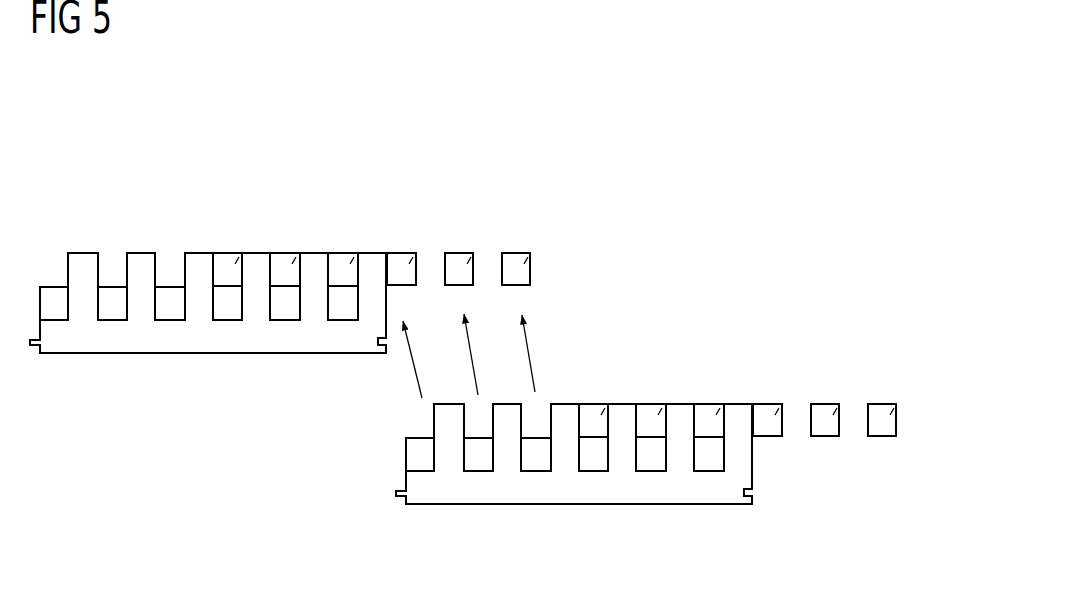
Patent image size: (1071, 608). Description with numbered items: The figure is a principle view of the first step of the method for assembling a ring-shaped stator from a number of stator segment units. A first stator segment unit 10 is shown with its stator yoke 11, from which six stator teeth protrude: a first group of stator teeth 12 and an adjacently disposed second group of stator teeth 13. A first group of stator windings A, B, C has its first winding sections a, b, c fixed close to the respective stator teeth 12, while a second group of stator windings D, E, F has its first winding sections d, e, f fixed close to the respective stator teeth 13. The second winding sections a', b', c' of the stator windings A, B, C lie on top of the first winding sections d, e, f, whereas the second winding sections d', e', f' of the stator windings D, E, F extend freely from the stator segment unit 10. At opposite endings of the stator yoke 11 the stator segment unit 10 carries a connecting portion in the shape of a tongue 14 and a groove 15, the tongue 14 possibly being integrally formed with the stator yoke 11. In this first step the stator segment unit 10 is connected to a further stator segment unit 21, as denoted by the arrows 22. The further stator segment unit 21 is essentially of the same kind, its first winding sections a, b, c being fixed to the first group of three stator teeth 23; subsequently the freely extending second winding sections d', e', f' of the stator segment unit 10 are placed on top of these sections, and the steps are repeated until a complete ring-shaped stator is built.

The stator segment unit 10 is at (280, 253).
The stator yoke 11 is at (117, 350).
The stator tooth 12 is at (80, 302).
The stator tooth 13 is at (257, 302).
The tongue 14 is at (37, 355).
The groove 15 is at (387, 353).
The further stator segment unit 21 is at (646, 421).
The arrows 22 is at (528, 357).
The stator tooth 23 is at (506, 475).
The stator winding A is at (112, 248).
The stator winding B is at (188, 247).
The stator winding C is at (252, 247).
The stator winding D is at (316, 243).
The stator winding E is at (386, 243).
The stator winding F is at (466, 243).